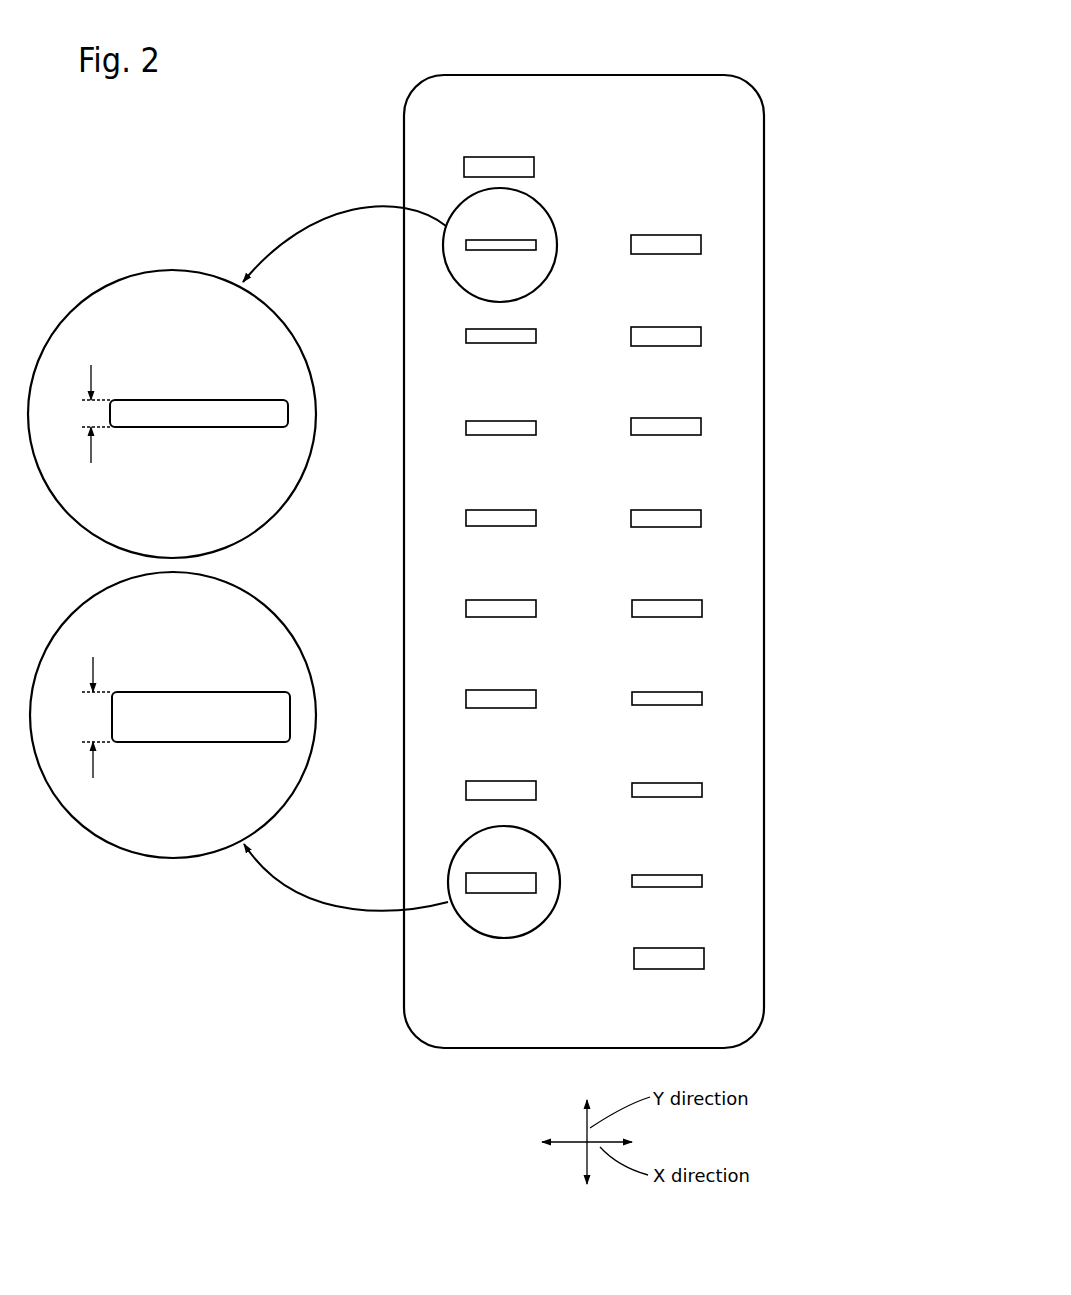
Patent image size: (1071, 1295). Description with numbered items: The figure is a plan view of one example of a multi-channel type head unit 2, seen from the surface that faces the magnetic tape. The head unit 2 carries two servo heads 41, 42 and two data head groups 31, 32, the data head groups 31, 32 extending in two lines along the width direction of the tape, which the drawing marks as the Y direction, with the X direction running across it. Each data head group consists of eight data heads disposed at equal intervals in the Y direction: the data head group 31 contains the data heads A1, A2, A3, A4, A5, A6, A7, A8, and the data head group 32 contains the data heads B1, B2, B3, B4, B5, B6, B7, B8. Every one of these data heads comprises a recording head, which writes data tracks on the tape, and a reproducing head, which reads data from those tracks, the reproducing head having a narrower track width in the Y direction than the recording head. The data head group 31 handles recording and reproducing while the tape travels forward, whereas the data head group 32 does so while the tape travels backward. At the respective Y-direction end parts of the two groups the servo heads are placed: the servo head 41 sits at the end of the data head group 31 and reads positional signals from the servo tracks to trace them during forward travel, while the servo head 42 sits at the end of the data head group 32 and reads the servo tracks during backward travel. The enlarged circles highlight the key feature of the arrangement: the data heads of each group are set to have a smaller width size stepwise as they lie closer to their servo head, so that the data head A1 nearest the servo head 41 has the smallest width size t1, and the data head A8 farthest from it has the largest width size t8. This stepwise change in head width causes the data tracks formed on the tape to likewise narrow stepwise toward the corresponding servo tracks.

The head unit 2 is at (786, 88).
The data head group 31 is at (510, 940).
The data head group 32 is at (671, 212).
The servo head 41 is at (500, 163).
The servo head 42 is at (668, 962).
The data head A1 is at (480, 252).
The data head A2 is at (466, 336).
The data head A3 is at (466, 428).
The data head A4 is at (466, 518).
The data head A5 is at (466, 608).
The data head A6 is at (466, 699).
The data head A7 is at (466, 791).
The data head A8 is at (478, 873).
The data head B1 is at (701, 244).
The data head B2 is at (701, 336).
The data head B3 is at (701, 427).
The data head B4 is at (701, 518).
The data head B5 is at (702, 608).
The data head B6 is at (702, 698).
The data head B7 is at (702, 790).
The data head B8 is at (702, 881).
The width size t1 is at (90, 412).
The width size t8 is at (92, 715).